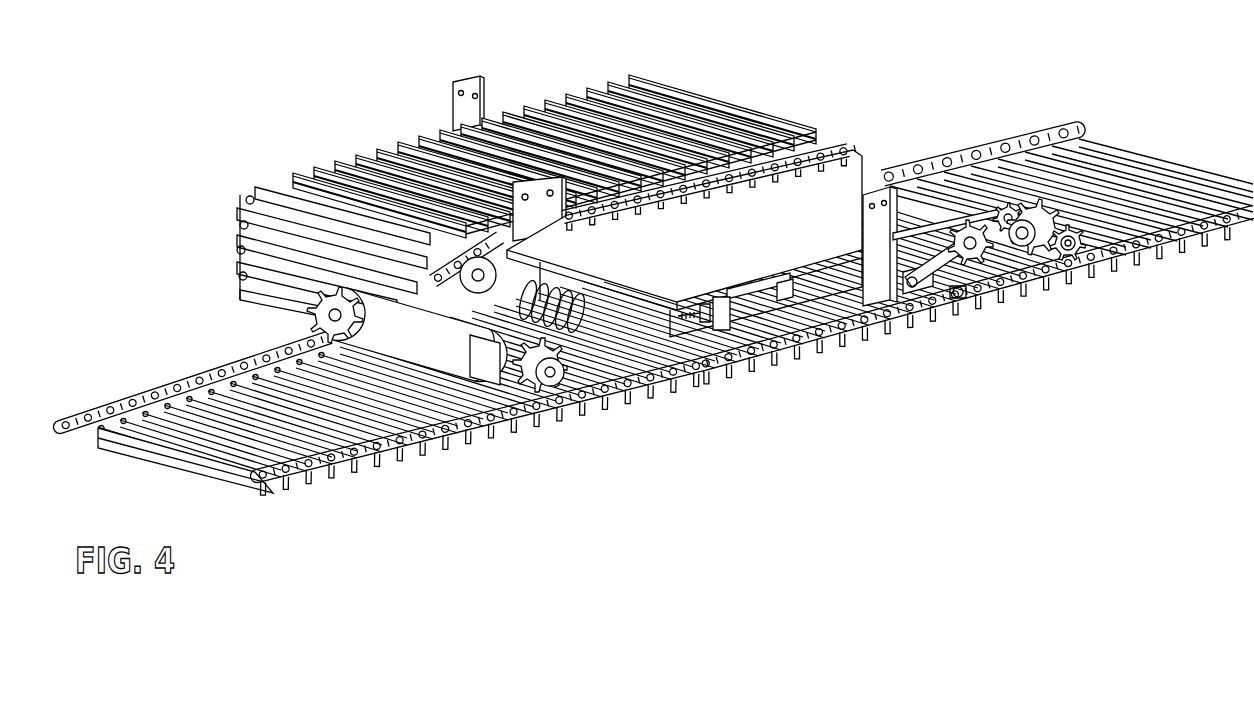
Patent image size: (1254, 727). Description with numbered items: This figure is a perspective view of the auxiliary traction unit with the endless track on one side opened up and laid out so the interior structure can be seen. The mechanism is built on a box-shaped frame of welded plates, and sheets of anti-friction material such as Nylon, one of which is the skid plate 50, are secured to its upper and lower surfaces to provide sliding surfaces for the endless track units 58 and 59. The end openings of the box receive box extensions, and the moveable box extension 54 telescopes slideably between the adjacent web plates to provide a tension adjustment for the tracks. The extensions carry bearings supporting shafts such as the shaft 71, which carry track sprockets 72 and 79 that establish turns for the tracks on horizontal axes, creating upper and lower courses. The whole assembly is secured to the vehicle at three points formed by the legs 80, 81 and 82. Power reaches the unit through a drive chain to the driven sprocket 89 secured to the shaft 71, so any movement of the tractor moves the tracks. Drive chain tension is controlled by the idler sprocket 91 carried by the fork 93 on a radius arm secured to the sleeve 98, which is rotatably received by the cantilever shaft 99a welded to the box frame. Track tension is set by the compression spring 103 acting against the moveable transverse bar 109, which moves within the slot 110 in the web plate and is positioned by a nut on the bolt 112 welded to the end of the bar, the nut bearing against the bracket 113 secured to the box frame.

The skid plate 50 is at (700, 237).
The box extension 54 is at (424, 328).
The endless track unit 58 is at (343, 160).
The endless track unit 59 is at (160, 382).
The shaft 71 is at (1085, 265).
The track sprocket 72 is at (544, 398).
The track sprocket 79 is at (1048, 203).
The leg 80 is at (863, 222).
The leg 81 is at (523, 226).
The leg 82 is at (484, 88).
The driven sprocket 89 is at (1108, 212).
The idler sprocket 91 is at (958, 215).
The fork 93 is at (998, 288).
The sleeve 98 is at (913, 318).
The cantilever shaft 99a is at (958, 296).
The compression spring 103 is at (563, 283).
The transverse bar 109 is at (753, 290).
The slot 110 is at (793, 298).
The bolt 112 is at (700, 318).
The bracket 113 is at (730, 308).